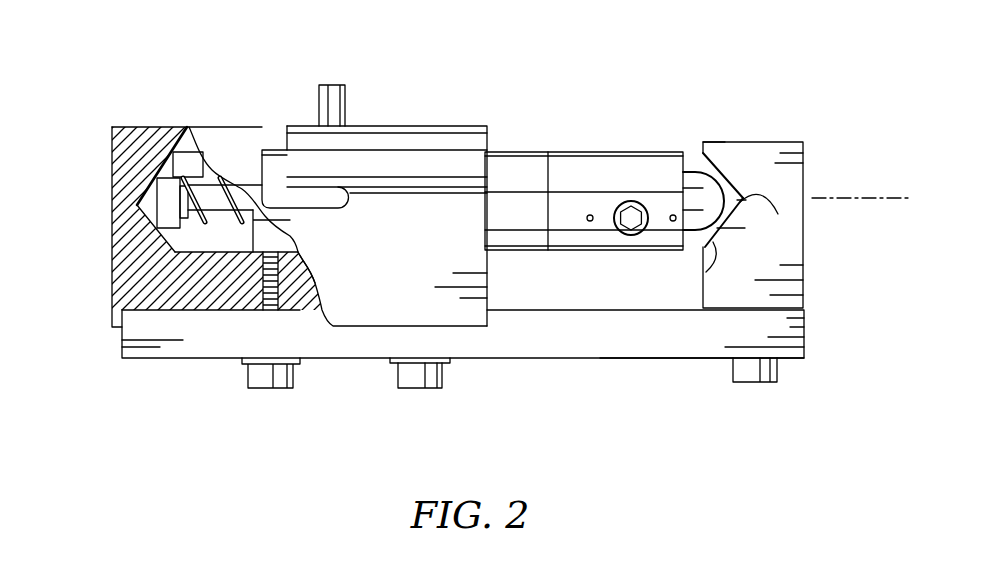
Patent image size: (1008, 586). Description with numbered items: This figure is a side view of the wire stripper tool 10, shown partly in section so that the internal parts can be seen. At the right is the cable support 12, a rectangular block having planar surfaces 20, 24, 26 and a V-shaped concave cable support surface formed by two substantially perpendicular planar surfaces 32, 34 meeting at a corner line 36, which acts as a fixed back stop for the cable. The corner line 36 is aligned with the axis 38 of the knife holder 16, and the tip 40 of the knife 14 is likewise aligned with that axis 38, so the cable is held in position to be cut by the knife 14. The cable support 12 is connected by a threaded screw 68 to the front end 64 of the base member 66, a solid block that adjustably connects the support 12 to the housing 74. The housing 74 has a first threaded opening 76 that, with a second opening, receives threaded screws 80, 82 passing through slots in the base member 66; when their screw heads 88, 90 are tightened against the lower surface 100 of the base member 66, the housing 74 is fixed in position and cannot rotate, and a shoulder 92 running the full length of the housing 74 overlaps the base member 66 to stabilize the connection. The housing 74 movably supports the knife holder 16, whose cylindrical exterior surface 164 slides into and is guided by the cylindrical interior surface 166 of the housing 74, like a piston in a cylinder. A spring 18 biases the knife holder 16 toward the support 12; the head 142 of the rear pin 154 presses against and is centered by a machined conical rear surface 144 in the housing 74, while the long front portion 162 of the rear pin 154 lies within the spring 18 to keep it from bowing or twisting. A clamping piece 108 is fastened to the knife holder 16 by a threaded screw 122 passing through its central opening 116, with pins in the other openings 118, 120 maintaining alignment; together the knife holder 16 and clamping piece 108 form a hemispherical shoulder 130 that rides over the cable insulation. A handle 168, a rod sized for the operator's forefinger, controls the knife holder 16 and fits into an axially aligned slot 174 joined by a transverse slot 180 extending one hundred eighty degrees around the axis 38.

The wire stripper tool 10 is at (135, 72).
The cable support 12 is at (793, 265).
The knife 14 is at (735, 195).
The knife holder 16 is at (503, 163).
The spring 18 is at (205, 167).
The planar surface 20 is at (777, 142).
The planar surface 24 is at (792, 296).
The planar surface 26 is at (795, 170).
The planar surface 32 is at (720, 153).
The planar surface 34 is at (718, 240).
The corner line 36 is at (718, 237).
The axis 38 is at (852, 198).
The tip 40 is at (744, 194).
The front end 64 is at (787, 318).
The base member 66 is at (203, 342).
The threaded screw 68 is at (765, 370).
The housing 74 is at (408, 312).
The first threaded opening 76 is at (300, 263).
The threaded screw 80 is at (267, 303).
The threaded screw 82 is at (443, 372).
The screw head 88 is at (263, 377).
The screw head 90 is at (408, 378).
The shoulder 92 is at (458, 312).
The lower surface 100 is at (700, 360).
The clamping piece 108 is at (573, 162).
The central opening 116 is at (637, 205).
The opening 118 is at (671, 213).
The opening 120 is at (589, 222).
The threaded screw 122 is at (640, 226).
The shoulder 130 is at (720, 142).
The head 142 is at (155, 190).
The conical rear surface 144 is at (137, 210).
The rear pin 154 is at (170, 213).
The front portion 162 is at (212, 203).
The cylindrical exterior surface 164 is at (277, 242).
The cylindrical interior surface 166 is at (240, 244).
The handle 168 is at (346, 104).
The axially aligned slot 174 is at (330, 198).
The transverse slot 180 is at (276, 128).